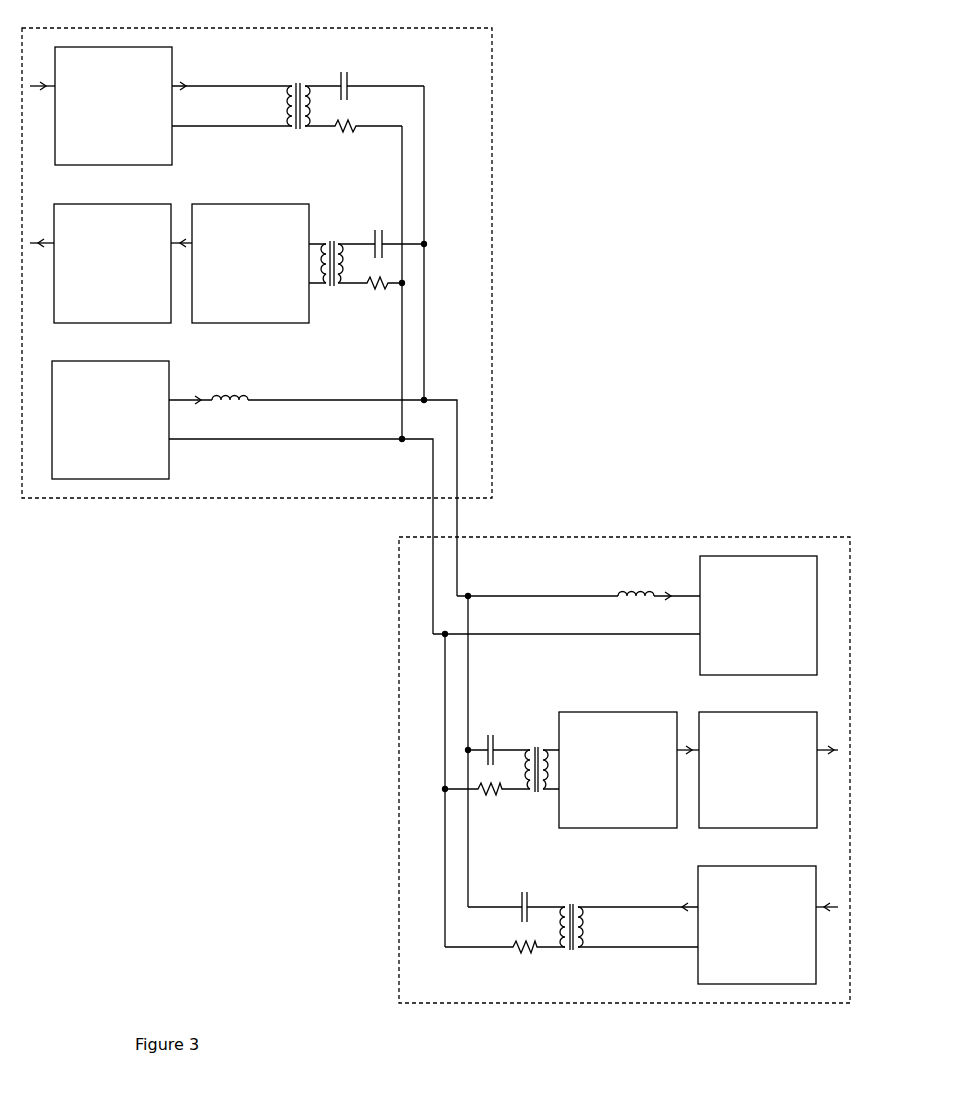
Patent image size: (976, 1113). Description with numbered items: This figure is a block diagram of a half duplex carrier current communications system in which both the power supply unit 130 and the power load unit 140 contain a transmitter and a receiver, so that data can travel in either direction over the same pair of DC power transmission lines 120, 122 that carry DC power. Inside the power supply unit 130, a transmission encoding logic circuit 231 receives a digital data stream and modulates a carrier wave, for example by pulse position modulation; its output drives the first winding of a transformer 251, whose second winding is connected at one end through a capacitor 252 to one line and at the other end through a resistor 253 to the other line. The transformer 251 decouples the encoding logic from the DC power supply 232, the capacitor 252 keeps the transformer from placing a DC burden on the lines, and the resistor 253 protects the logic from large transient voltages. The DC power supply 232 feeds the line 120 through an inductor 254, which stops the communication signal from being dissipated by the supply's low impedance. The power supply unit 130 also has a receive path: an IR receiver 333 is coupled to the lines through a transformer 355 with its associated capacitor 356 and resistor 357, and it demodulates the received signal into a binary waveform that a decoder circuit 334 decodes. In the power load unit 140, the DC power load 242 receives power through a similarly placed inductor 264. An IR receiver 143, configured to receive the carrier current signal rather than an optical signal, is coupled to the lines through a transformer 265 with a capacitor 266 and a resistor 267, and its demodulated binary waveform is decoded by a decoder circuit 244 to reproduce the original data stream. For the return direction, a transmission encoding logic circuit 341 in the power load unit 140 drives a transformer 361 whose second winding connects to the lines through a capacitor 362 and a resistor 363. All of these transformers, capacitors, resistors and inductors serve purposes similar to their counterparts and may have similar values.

The power supply unit 130 is at (502, 250).
The power load unit 140 is at (389, 793).
The transmission encoding logic circuit 231 is at (113, 106).
The transformer 251 is at (292, 80).
The capacitor 252 is at (342, 74).
The resistor 253 is at (338, 130).
The decoder circuit 334 is at (112, 263).
The IR receiver 333 is at (250, 263).
The transformer 355 is at (332, 290).
The capacitor 356 is at (376, 232).
The resistor 357 is at (384, 296).
The DC power supply 232 is at (110, 420).
The inductor 254 is at (236, 392).
The DC power transmission line 120 is at (332, 398).
The DC power transmission line 122 is at (334, 444).
The inductor 264 is at (632, 590).
The DC power load 242 is at (758, 615).
The capacitor 266 is at (494, 744).
The resistor 267 is at (484, 796).
The transformer 265 is at (538, 796).
The IR receiver 143 is at (618, 770).
The decoder circuit 244 is at (758, 770).
The capacitor 362 is at (530, 902).
The resistor 363 is at (532, 954).
The transformer 361 is at (576, 954).
The transmission encoding logic circuit 341 is at (757, 925).